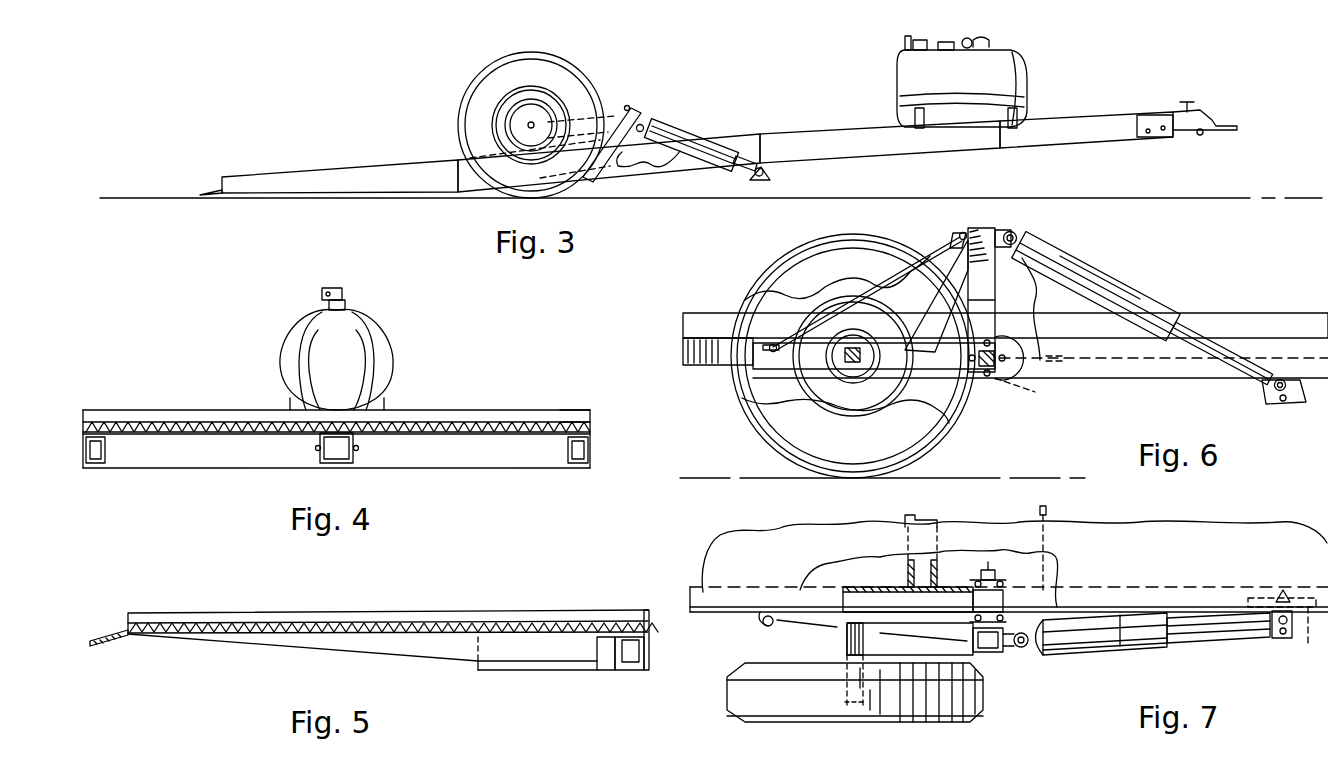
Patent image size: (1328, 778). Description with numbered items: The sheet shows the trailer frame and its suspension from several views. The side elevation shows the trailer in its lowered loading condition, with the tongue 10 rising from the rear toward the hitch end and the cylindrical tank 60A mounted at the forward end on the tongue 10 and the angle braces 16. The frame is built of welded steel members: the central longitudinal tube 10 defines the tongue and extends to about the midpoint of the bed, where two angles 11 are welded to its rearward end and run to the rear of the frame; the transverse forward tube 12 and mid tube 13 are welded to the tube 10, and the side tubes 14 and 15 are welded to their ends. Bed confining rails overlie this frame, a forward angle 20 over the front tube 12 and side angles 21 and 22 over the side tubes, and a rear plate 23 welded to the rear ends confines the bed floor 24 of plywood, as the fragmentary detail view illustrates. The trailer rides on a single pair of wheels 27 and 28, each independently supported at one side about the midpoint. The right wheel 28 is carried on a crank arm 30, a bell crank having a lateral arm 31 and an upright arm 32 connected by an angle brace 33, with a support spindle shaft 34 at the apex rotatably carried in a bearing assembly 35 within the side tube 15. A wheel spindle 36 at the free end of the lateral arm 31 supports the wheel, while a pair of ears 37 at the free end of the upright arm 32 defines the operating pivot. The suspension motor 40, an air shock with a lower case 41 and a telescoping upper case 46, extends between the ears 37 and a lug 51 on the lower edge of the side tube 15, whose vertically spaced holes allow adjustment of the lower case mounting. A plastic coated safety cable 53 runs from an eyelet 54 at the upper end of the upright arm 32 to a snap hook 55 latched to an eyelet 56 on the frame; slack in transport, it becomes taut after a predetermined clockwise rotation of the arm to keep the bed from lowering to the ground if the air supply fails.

In FIG. 3, the longitudinal tube 10 is at (1086, 139).
In FIG. 4, the longitudinal tube 10 is at (338, 464).
In FIG. 5, the longitudinal tube 10 is at (610, 658).
In FIG. 5, the angles 11 is at (384, 650).
In FIG. 6, the angles 11 is at (694, 350).
In FIG. 4, the forward tube 12 is at (458, 458).
In FIG. 5, the mid tube 13 is at (648, 660).
In FIG. 7, the mid tube 13 is at (915, 514).
In FIG. 4, the side tube 14 is at (95, 464).
In FIG. 3, the side tube 15 is at (870, 170).
In FIG. 4, the side tube 15 is at (580, 462).
In FIG. 6, the side tube 15 is at (1188, 372).
In FIG. 7, the side tube 15 is at (876, 598).
In FIG. 3, the angle braces 16 is at (978, 144).
In FIG. 4, the forward angle 20 is at (474, 412).
In FIG. 4, the side angle 21 is at (98, 414).
In FIG. 5, the side angle 21 is at (392, 616).
In FIG. 3, the side angle 22 is at (274, 178).
In FIG. 4, the side angle 22 is at (584, 412).
In FIG. 6, the side angle 22 is at (1250, 322).
In FIG. 5, the rear plate 23 is at (104, 638).
In FIG. 4, the bed floor 24 is at (170, 422).
In FIG. 5, the bed floor 24 is at (184, 622).
In FIG. 7, the bed floor 24 is at (764, 546).
In FIG. 6, the ground engaging wheel 27 is at (774, 294).
In FIG. 3, the ground engaging wheel 28 is at (496, 80).
In FIG. 6, the ground engaging wheel 28 is at (818, 252).
In FIG. 7, the ground engaging wheel 28 is at (806, 708).
In FIG. 3, the crank arm 30 is at (636, 114).
In FIG. 6, the crank arm 30 is at (1004, 287).
In FIG. 6, the lateral arm 31 is at (876, 330).
In FIG. 7, the lateral arm 31 is at (844, 640).
In FIG. 6, the upright arm 32 is at (996, 308).
In FIG. 7, the upright arm 32 is at (990, 654).
In FIG. 6, the angle brace 33 is at (910, 288).
In FIG. 6, the support spindle shaft 34 is at (1030, 382).
In FIG. 6, the bearing assembly 35 is at (994, 380).
In FIG. 7, the bearing assembly 35 is at (1001, 579).
In FIG. 6, the wheel spindle 36 is at (844, 354).
In FIG. 6, the ears 37 is at (1002, 234).
In FIG. 7, the ears 37 is at (1006, 656).
In FIG. 3, the suspension motor 40 is at (690, 116).
In FIG. 6, the suspension motor 40 is at (1110, 248).
In FIG. 7, the suspension motor 40 is at (1098, 671).
In FIG. 6, the lower case 41 is at (1184, 324).
In FIG. 7, the lower case 41 is at (1220, 636).
In FIG. 6, the upper case 46 is at (1126, 288).
In FIG. 7, the upper case 46 is at (1144, 648).
In FIG. 6, the lug 51 is at (1298, 384).
In FIG. 7, the lug 51 is at (1308, 638).
In FIG. 6, the cable 53 is at (950, 252).
In FIG. 7, the cable 53 is at (784, 630).
In FIG. 6, the eyelet 54 is at (963, 234).
In FIG. 6, the snap hook 55 is at (773, 344).
In FIG. 6, the eyelet 56 is at (770, 352).
In FIG. 7, the eyelet 56 is at (756, 622).
In FIG. 3, the cylindrical tank 60A is at (1010, 66).
In FIG. 4, the cylindrical tank 60A is at (362, 344).